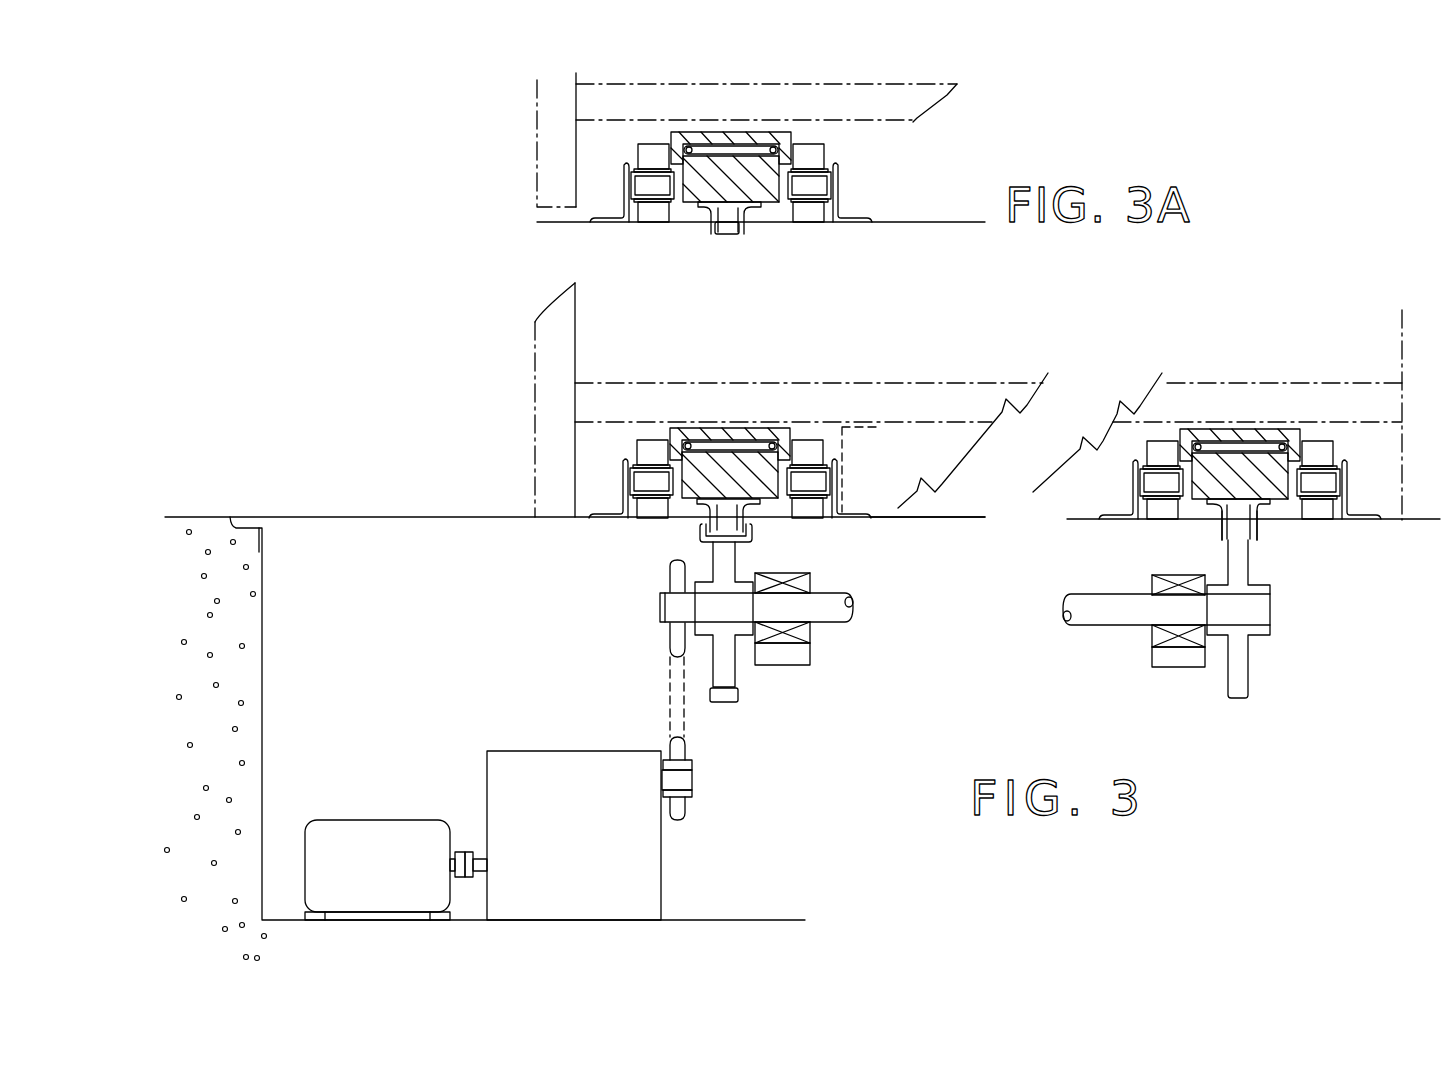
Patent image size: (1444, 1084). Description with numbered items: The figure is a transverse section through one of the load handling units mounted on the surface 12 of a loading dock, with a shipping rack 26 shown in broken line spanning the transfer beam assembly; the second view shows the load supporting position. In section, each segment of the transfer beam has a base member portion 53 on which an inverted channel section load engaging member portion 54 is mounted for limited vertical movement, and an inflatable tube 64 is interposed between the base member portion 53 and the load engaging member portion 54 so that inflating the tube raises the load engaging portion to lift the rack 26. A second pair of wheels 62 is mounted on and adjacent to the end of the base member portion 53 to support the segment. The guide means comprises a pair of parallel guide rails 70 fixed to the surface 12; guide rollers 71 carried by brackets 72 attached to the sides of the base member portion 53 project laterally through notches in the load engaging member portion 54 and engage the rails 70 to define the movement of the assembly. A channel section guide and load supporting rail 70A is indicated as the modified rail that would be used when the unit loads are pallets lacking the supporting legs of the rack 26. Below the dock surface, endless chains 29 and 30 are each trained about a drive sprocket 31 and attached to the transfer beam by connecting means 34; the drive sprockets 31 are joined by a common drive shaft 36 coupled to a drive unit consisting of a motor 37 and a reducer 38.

In FIG. 3, the surface 12 is at (940, 517).
In FIG. 3, the shipping rack 26 is at (636, 381).
In FIG. 3A, the shipping rack 26 is at (898, 126).
In FIG. 3, the endless chain 29 is at (703, 538).
In FIG. 3, the endless chain 30 is at (1250, 532).
In FIG. 3, the drive sprocket 31 is at (735, 558).
In FIG. 3, the connecting means 34 is at (740, 510).
In FIG. 3, the drive shaft 36 is at (833, 623).
In FIG. 3, the motor 37 is at (416, 818).
In FIG. 3, the reducer 38 is at (605, 750).
In FIG. 3A, the base member portion 53 is at (688, 203).
In FIG. 3, the load engaging member portion 54 is at (697, 428).
In FIG. 3A, the load engaging member portion 54 is at (670, 131).
In FIG. 3, the second pair of wheels 62 is at (805, 442).
In FIG. 3, the inflatable tube 64 is at (728, 440).
In FIG. 3A, the inflatable tube 64 is at (775, 135).
In FIG. 3, the guide rail 70 is at (625, 497).
In FIG. 3, the channel section guide and load supporting rail 70A is at (858, 428).
In FIG. 3, the guide roller 71 is at (633, 478).
In FIG. 3, the bracket 72 is at (645, 465).